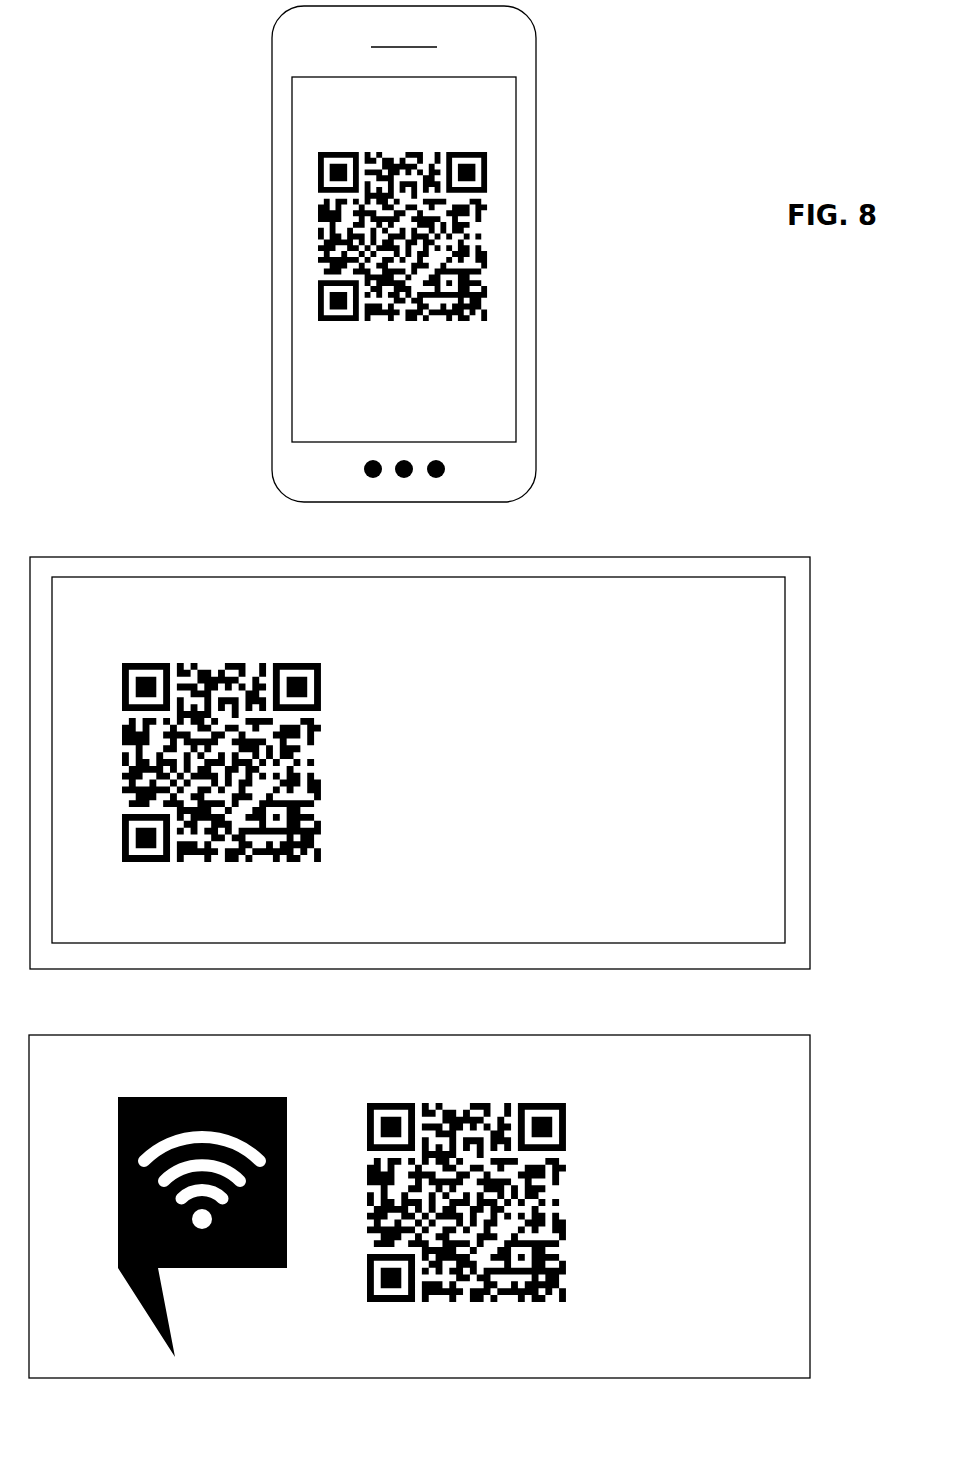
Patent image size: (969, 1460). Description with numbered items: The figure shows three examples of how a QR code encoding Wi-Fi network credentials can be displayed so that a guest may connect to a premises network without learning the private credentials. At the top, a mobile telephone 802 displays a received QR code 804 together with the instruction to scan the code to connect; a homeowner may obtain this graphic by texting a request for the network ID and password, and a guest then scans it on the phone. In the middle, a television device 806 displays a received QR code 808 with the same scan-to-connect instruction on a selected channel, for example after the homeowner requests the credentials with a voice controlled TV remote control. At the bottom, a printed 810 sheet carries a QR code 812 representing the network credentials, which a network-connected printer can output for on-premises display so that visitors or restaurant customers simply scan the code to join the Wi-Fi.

The mobile telephone 802 is at (535, 283).
The QR code 804 is at (486, 169).
The television device 806 is at (745, 557).
The QR code 808 is at (185, 663).
The printed display 810 is at (758, 1035).
The QR code 812 is at (565, 1268).